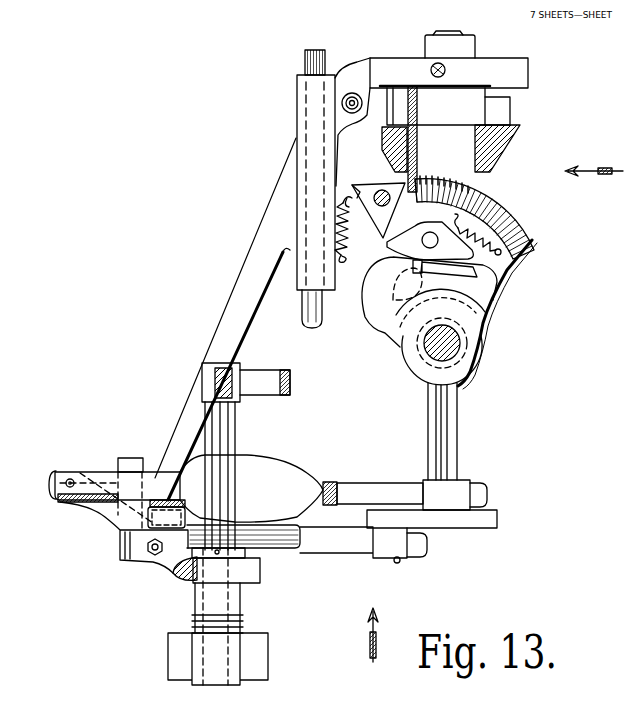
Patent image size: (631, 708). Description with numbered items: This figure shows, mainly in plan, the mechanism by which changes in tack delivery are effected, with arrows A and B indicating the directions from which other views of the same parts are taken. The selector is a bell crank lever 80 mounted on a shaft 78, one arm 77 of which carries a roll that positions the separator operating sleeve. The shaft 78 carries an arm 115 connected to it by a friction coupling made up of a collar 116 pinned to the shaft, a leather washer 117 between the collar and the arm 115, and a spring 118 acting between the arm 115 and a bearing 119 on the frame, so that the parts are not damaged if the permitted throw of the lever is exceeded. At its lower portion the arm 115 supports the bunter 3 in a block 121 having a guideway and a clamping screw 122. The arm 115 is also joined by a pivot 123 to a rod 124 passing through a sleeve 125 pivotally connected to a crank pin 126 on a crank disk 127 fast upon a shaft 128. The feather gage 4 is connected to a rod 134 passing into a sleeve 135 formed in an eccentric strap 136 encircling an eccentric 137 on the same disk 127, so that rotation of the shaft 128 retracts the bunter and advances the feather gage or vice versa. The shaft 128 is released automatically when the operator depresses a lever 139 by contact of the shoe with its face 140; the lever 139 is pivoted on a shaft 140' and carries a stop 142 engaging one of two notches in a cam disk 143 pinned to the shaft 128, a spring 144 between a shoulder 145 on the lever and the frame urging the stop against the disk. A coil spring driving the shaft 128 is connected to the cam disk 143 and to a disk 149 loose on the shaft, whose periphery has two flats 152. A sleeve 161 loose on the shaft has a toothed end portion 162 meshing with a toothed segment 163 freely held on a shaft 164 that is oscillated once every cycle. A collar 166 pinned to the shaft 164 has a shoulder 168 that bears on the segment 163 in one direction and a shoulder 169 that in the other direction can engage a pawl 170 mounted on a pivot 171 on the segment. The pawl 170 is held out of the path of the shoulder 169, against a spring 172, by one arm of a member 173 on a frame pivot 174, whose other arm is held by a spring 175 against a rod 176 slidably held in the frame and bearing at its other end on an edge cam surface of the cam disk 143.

The bunter 3 is at (52, 492).
The feather gage 4 is at (90, 484).
The arm of bell crank lever 77 is at (262, 378).
The shaft 78 is at (150, 470).
The bell crank lever 80 is at (205, 410).
The arm 115 is at (259, 582).
The collar 116 is at (183, 560).
The washer 117 is at (210, 573).
The spring 118 is at (242, 627).
The bearing 119 is at (198, 667).
The block 121 is at (133, 548).
The clamping screw 122 is at (132, 562).
The pivot 123 is at (160, 505).
The rod 124 is at (283, 550).
The sleeve 125 is at (362, 545).
The crank pin 126 is at (398, 561).
The crank disk 127 is at (497, 522).
The shaft 128 is at (455, 455).
The rod 134 is at (329, 486).
The sleeve 135 is at (363, 488).
The eccentric strap 136 is at (486, 500).
The eccentric 137 is at (470, 484).
The lever 139 is at (253, 272).
The face 140 is at (123, 447).
The shaft 140' is at (320, 327).
The stop 142 is at (440, 63).
The cam disk 143 is at (522, 90).
The spring 144 is at (353, 93).
The shoulder 145 is at (340, 113).
The disk 149 is at (510, 112).
The flat 152 is at (518, 82).
The sleeve 161 is at (476, 160).
The toothed end portion 162 is at (477, 181).
The toothed segment 163 is at (507, 268).
The shaft 164 is at (460, 353).
The collar 166 is at (473, 377).
The shoulder 168 is at (483, 290).
The shoulder 169 is at (478, 275).
The pawl 170 is at (465, 252).
The pivot 171 is at (438, 240).
The spring 172 is at (503, 248).
The member 173 is at (348, 185).
The pivot 174 is at (346, 198).
The spring 175 is at (337, 235).
The rod 176 is at (419, 107).
The arrow A is at (371, 646).
The arrow B is at (594, 172).